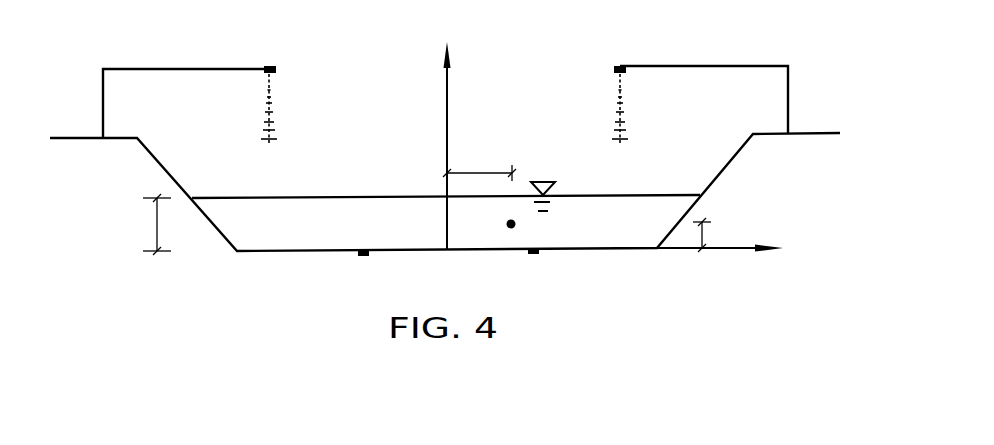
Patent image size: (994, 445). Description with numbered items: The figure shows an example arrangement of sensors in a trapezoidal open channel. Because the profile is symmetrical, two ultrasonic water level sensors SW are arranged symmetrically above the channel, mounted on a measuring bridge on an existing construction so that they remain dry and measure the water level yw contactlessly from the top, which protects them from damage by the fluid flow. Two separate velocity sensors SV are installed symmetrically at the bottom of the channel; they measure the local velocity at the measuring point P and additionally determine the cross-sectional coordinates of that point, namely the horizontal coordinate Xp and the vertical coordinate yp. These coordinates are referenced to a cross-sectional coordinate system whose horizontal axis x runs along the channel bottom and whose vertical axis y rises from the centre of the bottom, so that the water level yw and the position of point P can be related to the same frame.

The water level sensor SW is at (457, 93).
The velocity sensor SV is at (457, 265).
The measuring point P is at (505, 220).
The horizontal cross-sectional coordinate of measuring point Xp is at (479, 160).
The vertical cross-sectional coordinate of measuring point yp is at (717, 232).
The water level yw is at (168, 224).
The horizontal coordinate axis x is at (729, 249).
The vertical coordinate axis y is at (456, 142).